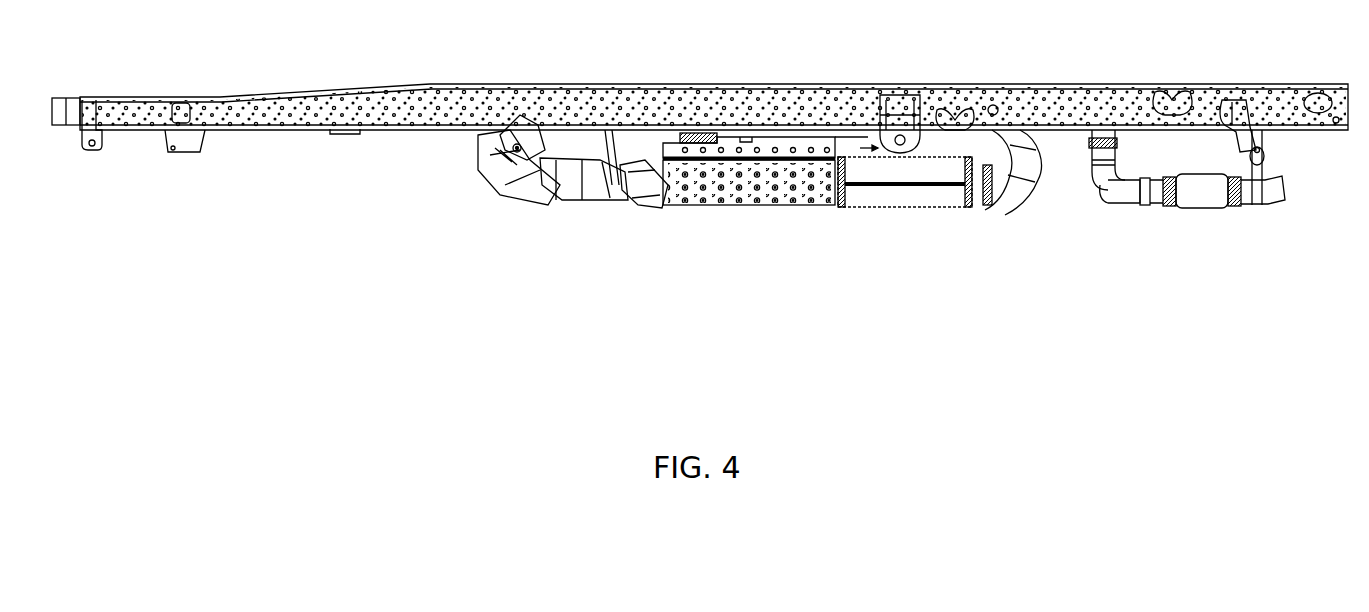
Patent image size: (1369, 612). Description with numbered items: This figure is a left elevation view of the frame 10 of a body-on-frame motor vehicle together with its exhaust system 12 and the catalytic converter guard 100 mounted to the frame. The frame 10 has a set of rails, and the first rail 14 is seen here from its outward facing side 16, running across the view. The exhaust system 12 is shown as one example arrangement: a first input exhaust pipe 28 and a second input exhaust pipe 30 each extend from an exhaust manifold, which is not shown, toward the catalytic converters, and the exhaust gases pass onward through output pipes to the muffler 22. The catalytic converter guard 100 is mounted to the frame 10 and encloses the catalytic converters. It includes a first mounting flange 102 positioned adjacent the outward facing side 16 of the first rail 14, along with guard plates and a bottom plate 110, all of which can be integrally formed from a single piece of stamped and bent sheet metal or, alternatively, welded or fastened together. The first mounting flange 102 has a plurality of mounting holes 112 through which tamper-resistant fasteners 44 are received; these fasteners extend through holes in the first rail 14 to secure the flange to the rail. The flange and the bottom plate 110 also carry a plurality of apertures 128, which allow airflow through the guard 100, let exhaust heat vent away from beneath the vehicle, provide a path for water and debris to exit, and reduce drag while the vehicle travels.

The frame 10 is at (233, 172).
The exhaust system 12 is at (502, 217).
The first rail 14 is at (322, 90).
The outward facing side 16 is at (345, 133).
The muffler 22 is at (905, 200).
The first input exhaust pipe 28 is at (645, 206).
The second input exhaust pipe 30 is at (492, 160).
The tamper-resistant fasteners 44 is at (672, 132).
The catalytic converter guard 100 is at (730, 166).
The first mounting flange 102 is at (705, 197).
The bottom plate 110 is at (770, 205).
The mounting holes 112 is at (745, 134).
The apertures 128 is at (787, 200).